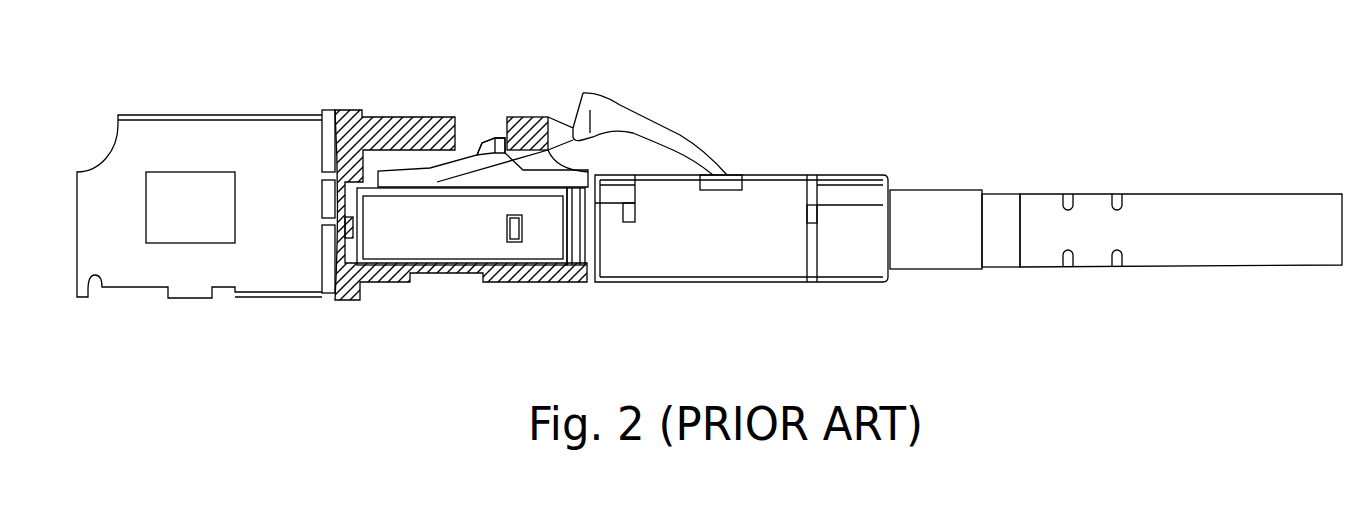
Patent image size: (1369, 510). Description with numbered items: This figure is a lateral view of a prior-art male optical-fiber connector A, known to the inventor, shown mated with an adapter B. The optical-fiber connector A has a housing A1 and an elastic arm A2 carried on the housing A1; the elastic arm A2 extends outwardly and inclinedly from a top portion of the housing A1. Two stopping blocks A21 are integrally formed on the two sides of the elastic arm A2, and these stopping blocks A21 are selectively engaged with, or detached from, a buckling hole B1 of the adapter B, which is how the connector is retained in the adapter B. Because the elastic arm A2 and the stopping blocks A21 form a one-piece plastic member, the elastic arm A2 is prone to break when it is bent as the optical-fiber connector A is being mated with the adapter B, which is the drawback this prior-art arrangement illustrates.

The adapter B is at (245, 117).
The buckling hole B1 is at (472, 128).
The optical-fiber connector A is at (860, 175).
The housing A1 is at (462, 240).
The elastic arm A2 is at (573, 127).
The stopping blocks A21 is at (502, 145).